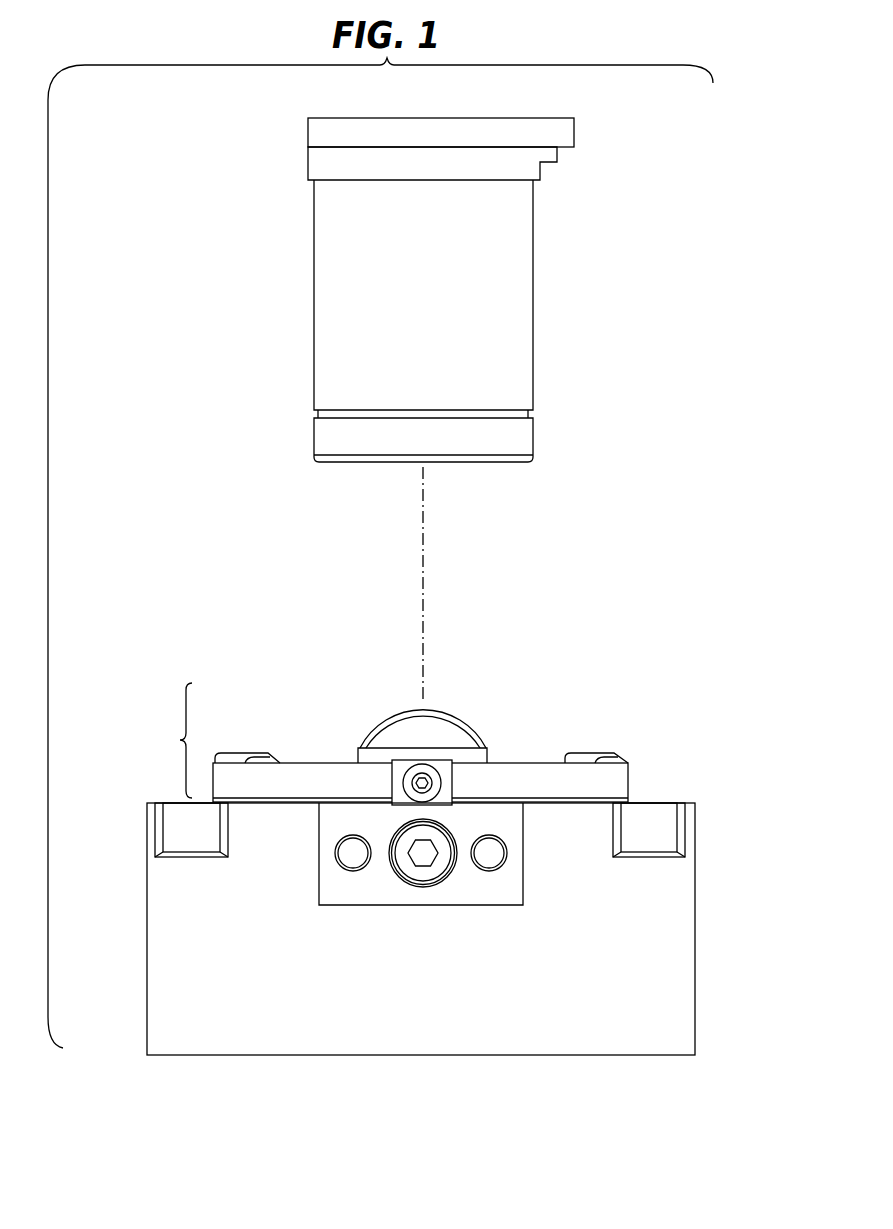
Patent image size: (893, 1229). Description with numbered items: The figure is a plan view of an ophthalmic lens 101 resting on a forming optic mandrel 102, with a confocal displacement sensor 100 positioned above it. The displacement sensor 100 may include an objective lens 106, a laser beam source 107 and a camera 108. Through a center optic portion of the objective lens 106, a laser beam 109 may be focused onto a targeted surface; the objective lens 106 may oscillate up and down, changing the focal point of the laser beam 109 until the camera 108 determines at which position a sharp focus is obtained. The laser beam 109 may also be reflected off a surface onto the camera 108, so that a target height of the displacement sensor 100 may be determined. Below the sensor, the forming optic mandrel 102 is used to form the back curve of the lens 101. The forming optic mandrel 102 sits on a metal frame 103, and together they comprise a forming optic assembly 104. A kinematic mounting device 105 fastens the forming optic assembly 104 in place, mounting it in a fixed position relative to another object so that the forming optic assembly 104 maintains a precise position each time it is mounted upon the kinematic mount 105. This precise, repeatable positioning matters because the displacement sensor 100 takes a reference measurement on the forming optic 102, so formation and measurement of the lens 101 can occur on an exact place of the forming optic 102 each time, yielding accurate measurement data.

The confocal displacement sensor 100 is at (473, 329).
The ophthalmic lens 101 is at (436, 710).
The forming optic mandrel 102 is at (480, 743).
The metal frame 103 is at (312, 780).
The forming optic assembly 104 is at (382, 740).
The kinematic mounting device 105 is at (537, 977).
The objective lens 106 is at (380, 464).
The laser beam source 107 is at (540, 172).
The camera 108 is at (308, 137).
The laser beam 109 is at (423, 563).